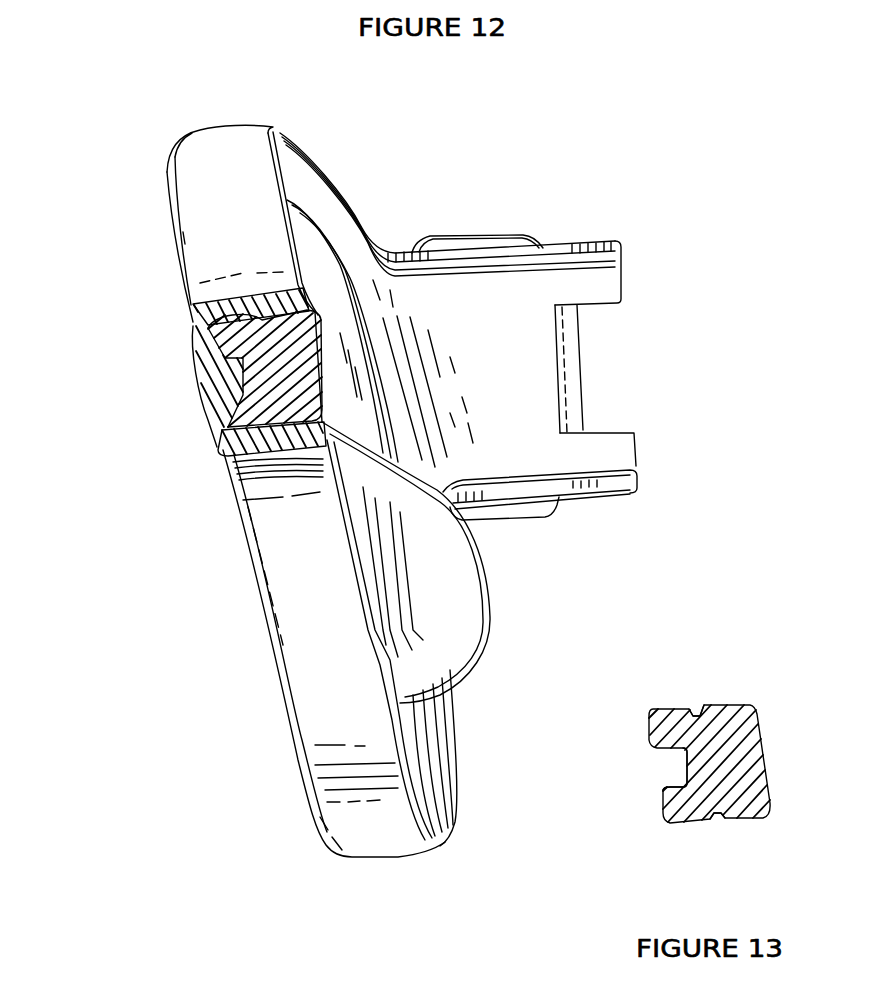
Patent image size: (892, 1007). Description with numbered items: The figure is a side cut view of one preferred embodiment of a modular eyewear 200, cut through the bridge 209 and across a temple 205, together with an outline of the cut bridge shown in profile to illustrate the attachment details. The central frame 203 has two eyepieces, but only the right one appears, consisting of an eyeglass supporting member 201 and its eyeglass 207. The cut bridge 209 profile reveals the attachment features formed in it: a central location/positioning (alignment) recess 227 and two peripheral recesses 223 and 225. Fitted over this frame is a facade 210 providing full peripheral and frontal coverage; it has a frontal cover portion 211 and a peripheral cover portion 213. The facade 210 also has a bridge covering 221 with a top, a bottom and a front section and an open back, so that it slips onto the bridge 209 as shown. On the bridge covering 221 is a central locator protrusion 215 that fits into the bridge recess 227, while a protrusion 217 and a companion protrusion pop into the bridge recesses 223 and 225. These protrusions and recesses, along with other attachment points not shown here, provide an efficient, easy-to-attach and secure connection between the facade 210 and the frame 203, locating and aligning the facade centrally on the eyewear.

In FIG. 12, the modular eyewear 200 is at (538, 577).
In FIG. 13, the modular eyewear 200 is at (690, 676).
In FIG. 12, the eyeglass supporting member 201 is at (313, 197).
In FIG. 12, the central frame 203 is at (477, 234).
In FIG. 12, the temple 205 is at (608, 276).
In FIG. 12, the eyeglass 207 is at (340, 293).
In FIG. 12, the bridge 209 is at (210, 410).
In FIG. 13, the bridge 209 is at (673, 812).
In FIG. 12, the facade 210 is at (216, 600).
In FIG. 12, the frontal cover portion 211 is at (305, 801).
In FIG. 12, the peripheral cover portion 213 is at (320, 686).
In FIG. 12, the central locator protrusion 215 is at (193, 371).
In FIG. 12, the protrusion 217 is at (186, 322).
In FIG. 12, the bridge covering 221 is at (215, 447).
In FIG. 13, the peripheral recess 223 is at (698, 710).
In FIG. 13, the peripheral recess 225 is at (717, 818).
In FIG. 13, the location/positioning (alignment) recess 227 is at (687, 770).